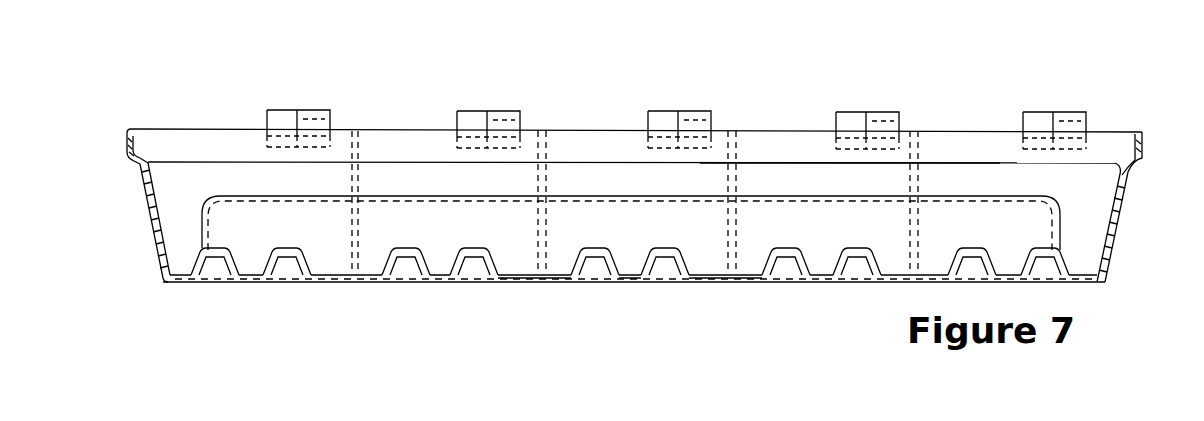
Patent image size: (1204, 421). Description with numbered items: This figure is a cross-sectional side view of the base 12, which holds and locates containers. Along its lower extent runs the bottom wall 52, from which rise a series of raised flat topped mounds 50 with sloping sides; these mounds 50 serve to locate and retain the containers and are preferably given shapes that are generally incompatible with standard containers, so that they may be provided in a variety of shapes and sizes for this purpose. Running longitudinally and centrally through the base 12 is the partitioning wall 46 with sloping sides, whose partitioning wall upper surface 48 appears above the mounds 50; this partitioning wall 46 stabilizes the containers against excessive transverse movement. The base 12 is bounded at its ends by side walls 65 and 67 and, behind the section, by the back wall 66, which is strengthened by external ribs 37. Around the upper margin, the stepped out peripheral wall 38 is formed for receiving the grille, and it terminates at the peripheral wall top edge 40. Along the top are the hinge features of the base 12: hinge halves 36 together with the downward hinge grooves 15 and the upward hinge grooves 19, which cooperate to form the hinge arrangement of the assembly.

The base 12 is at (1138, 271).
The downward hinge grooves 15 is at (307, 125).
The upward hinge grooves 19 is at (283, 117).
The hinge halves 36 is at (493, 122).
The external ribs 37 is at (544, 140).
The stepped out peripheral wall 38 is at (125, 136).
The peripheral wall top edge 40 is at (129, 128).
The partitioning wall 46 is at (503, 230).
The partitioning wall upper surface 48 is at (618, 196).
The raised flat topped mounds 50 is at (492, 285).
The bottom wall 52 is at (720, 285).
The side wall 65 is at (152, 220).
The back wall 66 is at (760, 180).
The side wall 67 is at (1111, 207).